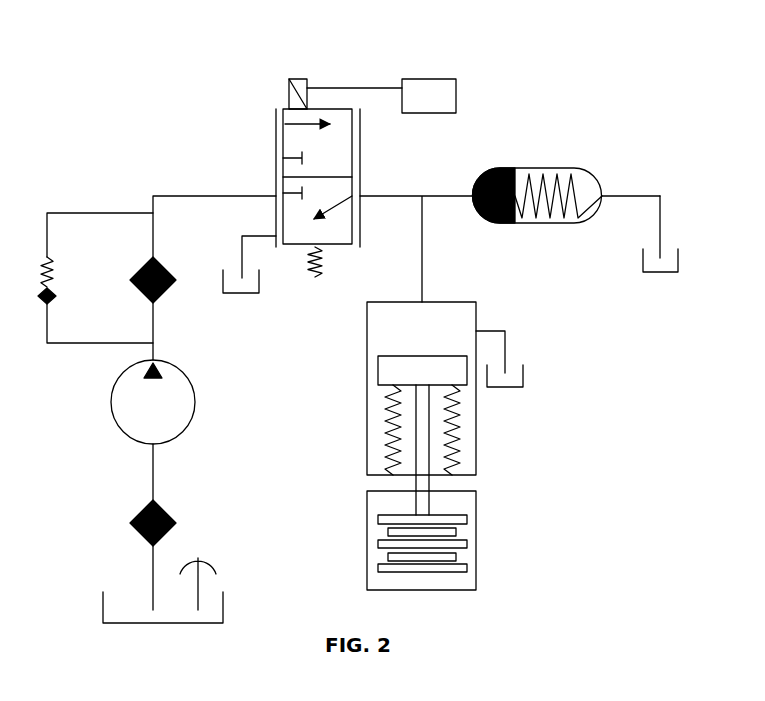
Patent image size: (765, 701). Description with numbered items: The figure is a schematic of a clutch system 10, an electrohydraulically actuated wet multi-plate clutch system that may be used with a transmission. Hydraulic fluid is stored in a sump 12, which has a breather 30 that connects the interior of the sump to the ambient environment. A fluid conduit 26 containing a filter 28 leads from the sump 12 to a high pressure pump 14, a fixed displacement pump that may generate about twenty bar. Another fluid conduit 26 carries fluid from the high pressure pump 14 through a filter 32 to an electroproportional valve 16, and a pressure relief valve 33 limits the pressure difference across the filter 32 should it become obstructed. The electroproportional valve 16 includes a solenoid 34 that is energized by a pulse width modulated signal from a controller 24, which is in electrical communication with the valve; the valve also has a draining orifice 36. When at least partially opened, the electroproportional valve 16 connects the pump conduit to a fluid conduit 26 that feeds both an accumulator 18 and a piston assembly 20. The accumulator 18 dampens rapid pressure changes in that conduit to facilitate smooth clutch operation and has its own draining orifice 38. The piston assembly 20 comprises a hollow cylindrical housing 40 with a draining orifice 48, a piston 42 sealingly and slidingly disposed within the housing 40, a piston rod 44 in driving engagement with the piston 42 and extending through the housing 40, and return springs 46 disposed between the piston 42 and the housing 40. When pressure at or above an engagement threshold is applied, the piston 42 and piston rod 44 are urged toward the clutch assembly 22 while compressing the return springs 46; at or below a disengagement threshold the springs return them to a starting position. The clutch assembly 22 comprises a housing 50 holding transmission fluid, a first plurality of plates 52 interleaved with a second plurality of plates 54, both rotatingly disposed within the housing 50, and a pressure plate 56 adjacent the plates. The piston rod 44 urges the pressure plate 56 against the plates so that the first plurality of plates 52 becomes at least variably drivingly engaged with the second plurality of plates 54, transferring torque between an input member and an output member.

The clutch system 10 is at (520, 110).
The sump 12 is at (230, 598).
The high pressure pump 14 is at (110, 402).
The electroproportional valve 16 is at (270, 125).
The accumulator 18 is at (545, 168).
The piston assembly 20 is at (448, 298).
The clutch assembly 22 is at (480, 505).
The controller 24 is at (430, 79).
The fluid conduits 26 is at (213, 195).
The filter 28 is at (130, 520).
The breather 30 is at (200, 556).
The filter 32 is at (140, 267).
The pressure relief valve 33 is at (58, 265).
The solenoid 34 is at (289, 87).
The draining orifice 36 is at (242, 236).
The draining orifice 38 is at (632, 196).
The housing 40 is at (478, 414).
The piston 42 is at (378, 369).
The piston rod 44 is at (420, 428).
The return spring 46 is at (390, 455).
The draining orifice 48 is at (495, 331).
The housing 50 is at (478, 577).
The first plurality of plates 52 is at (456, 557).
The second plurality of plates 54 is at (378, 568).
The pressure plate 56 is at (378, 519).